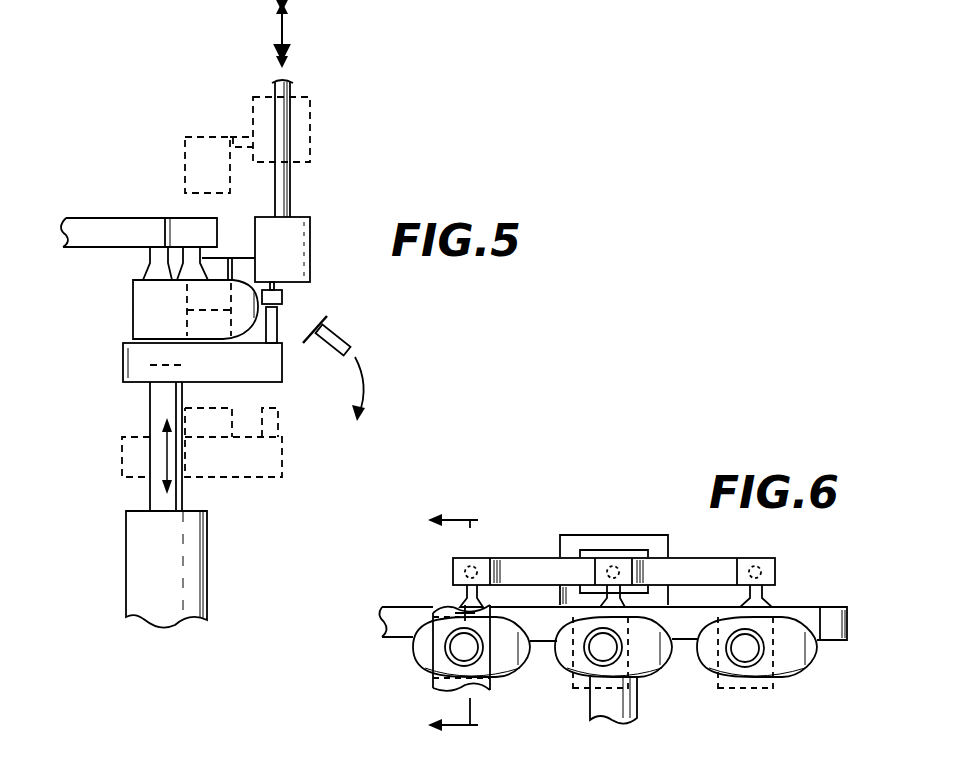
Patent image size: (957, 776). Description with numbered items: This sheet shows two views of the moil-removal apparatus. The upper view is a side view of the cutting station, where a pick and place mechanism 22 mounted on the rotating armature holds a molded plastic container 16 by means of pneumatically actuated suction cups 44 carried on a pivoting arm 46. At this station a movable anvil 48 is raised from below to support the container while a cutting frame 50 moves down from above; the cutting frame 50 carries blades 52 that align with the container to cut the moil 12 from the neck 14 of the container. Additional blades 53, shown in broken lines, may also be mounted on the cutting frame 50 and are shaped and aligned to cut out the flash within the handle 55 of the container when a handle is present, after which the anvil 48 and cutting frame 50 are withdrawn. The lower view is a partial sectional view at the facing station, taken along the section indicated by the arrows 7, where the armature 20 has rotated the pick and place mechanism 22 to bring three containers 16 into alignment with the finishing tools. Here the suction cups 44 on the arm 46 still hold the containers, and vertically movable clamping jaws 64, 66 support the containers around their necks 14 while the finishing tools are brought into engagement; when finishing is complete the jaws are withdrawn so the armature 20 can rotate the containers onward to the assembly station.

In FIG. 6, the section line 7- 7 is at (463, 625).
In FIG. 5, the moil 12 is at (330, 345).
In FIG. 5, the neck 14 is at (276, 303).
In FIG. 6, the neck 14 is at (745, 667).
In FIG. 5, the molded plastic container 16 is at (150, 330).
In FIG. 6, the molded plastic container 16 is at (795, 672).
In FIG. 6, the rotating armature 20 is at (822, 630).
In FIG. 5, the pick and place mechanism 22 is at (98, 234).
In FIG. 6, the pick and place mechanism 22 is at (614, 550).
In FIG. 5, the suction cup 44 is at (150, 272).
In FIG. 6, the suction cup 44 is at (768, 608).
In FIG. 5, the pivoting arm 46 is at (130, 228).
In FIG. 6, the pivoting arm 46 is at (780, 570).
In FIG. 5, the movable anvil 48 is at (125, 370).
In FIG. 5, the cutting frame 50 is at (308, 228).
In FIG. 5, the blade 52 is at (283, 292).
In FIG. 5, the additional blade 53 is at (212, 142).
In FIG. 6, the handle 55 is at (545, 642).
In FIG. 6, the clamping jaw 64 is at (432, 607).
In FIG. 6, the clamping jaw 66 is at (433, 682).